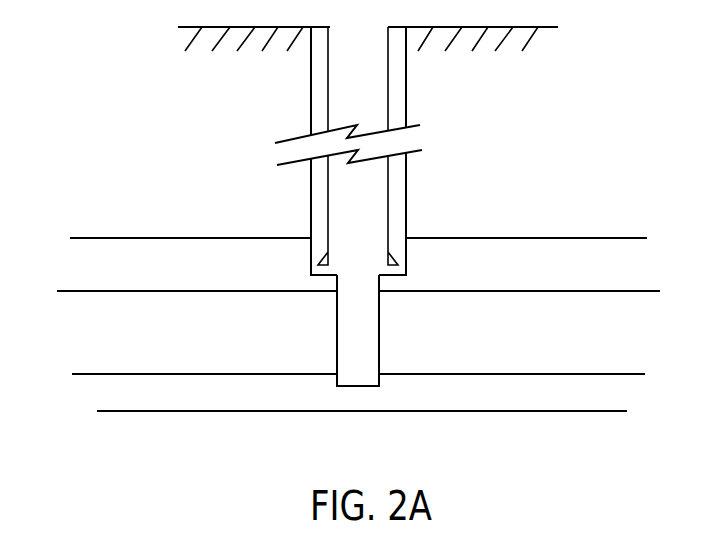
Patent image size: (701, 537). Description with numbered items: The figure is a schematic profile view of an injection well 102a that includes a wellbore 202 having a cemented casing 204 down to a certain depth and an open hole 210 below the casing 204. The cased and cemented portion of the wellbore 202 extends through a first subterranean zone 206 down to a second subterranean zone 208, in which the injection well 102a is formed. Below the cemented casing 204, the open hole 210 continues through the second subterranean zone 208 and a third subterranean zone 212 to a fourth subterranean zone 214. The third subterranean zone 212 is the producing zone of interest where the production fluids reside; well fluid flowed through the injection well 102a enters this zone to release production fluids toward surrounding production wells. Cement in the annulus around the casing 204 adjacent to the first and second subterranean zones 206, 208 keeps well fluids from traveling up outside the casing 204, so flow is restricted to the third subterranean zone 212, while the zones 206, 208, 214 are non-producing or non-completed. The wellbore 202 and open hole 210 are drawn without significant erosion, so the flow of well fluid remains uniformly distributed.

The injection well 102a is at (91, 76).
The wellbore 202 is at (405, 64).
The cemented casing 204 is at (389, 119).
The first subterranean zone 206 is at (567, 195).
The second subterranean zone 208 is at (567, 270).
The open hole 210 is at (337, 340).
The third subterranean zone 212 is at (567, 331).
The fourth subterranean zone 214 is at (571, 406).